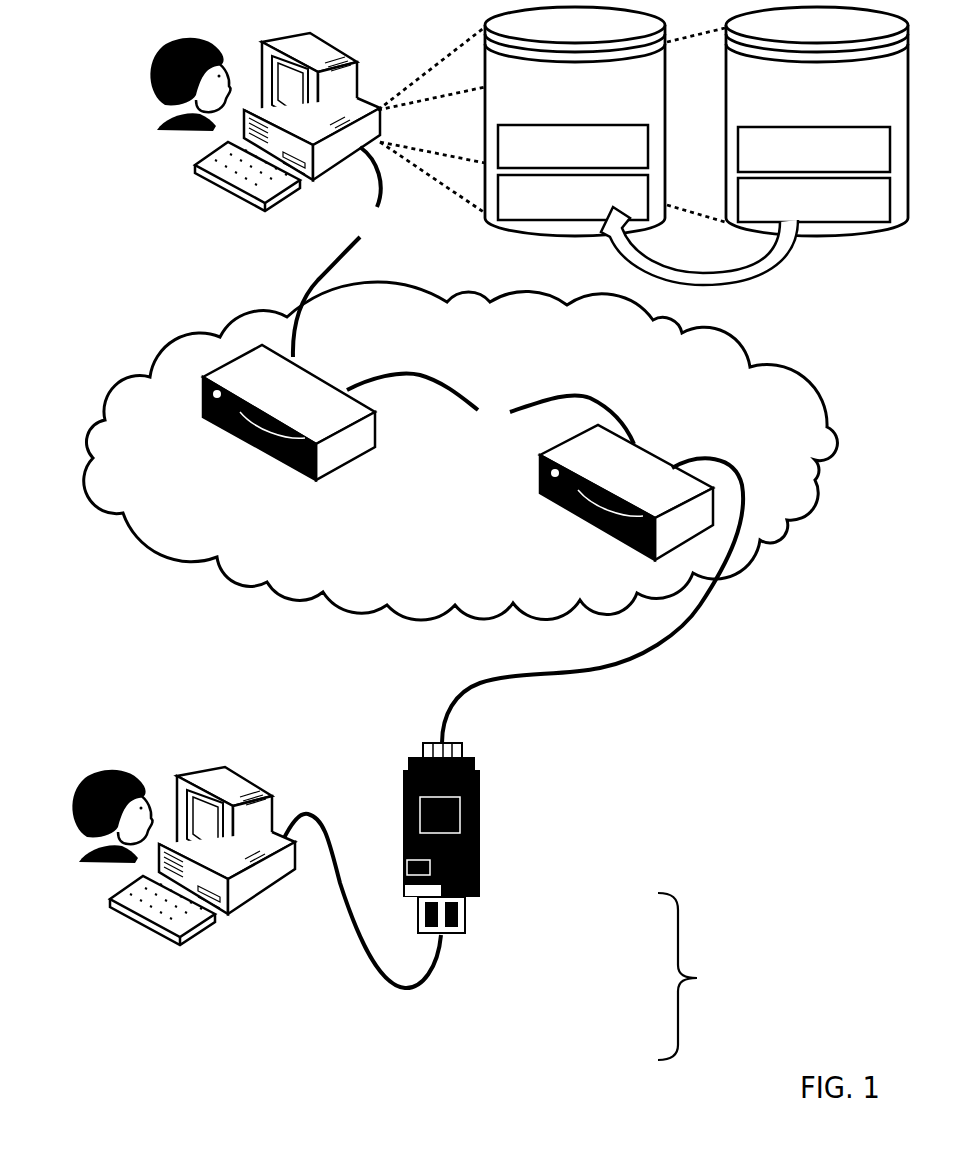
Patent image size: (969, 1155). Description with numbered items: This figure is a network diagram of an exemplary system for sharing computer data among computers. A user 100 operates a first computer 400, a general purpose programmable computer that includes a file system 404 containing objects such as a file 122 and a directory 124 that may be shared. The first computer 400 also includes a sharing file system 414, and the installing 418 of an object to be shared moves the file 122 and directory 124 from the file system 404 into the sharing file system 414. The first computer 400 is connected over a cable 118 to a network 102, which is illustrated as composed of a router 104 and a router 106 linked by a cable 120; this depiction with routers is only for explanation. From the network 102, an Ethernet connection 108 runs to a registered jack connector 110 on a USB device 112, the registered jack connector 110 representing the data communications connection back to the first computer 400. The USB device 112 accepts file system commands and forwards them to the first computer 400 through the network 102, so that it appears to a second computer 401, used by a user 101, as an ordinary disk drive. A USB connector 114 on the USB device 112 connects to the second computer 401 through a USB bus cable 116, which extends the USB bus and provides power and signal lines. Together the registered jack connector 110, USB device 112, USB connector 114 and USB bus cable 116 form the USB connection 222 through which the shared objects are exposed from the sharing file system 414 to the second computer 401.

The user 100 is at (140, 103).
The user 101 is at (62, 836).
The network 102 is at (657, 361).
The router 104 is at (352, 513).
The router 106 is at (595, 568).
The Ethernet connection 108 is at (675, 647).
The RJ-45 connector 110 is at (472, 748).
The USB device 112 is at (490, 833).
The USB connector 114 is at (473, 920).
The USB bus cable 116 is at (435, 983).
The cable 118 is at (380, 233).
The cable 120 is at (510, 424).
The object 122 is at (848, 210).
The object 124 is at (872, 160).
The USB connection 222 is at (740, 1021).
The first computer 400 is at (253, 263).
The second computer 401 is at (215, 1003).
The file system 404 is at (887, 93).
The sharing file system 414 is at (592, 120).
The installing 418 is at (715, 270).